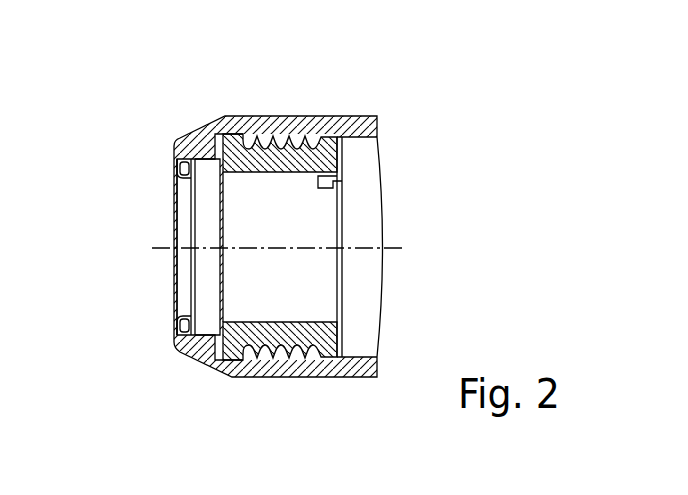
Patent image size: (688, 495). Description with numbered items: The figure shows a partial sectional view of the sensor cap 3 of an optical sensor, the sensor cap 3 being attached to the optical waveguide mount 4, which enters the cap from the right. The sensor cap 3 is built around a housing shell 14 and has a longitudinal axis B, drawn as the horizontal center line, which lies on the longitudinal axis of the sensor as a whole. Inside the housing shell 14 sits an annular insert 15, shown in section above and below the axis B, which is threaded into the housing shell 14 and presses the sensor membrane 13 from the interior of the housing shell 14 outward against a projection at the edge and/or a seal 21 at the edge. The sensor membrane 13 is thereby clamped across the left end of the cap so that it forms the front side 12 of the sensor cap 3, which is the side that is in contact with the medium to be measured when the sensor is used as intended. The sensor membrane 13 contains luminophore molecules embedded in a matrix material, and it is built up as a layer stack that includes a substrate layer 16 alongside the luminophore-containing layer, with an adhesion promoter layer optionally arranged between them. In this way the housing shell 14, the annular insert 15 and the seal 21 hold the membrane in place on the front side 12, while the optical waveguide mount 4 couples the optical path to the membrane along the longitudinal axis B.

The sensor cap 3 is at (340, 88).
The optical waveguide mount 4 is at (358, 223).
The front side 12 is at (176, 213).
The sensor membrane 13 is at (183, 279).
The housing shell 14 is at (325, 360).
The annular insert 15 is at (270, 340).
The substrate layer 16 is at (201, 325).
The seal 21 is at (193, 314).
The longitudinal axis B is at (266, 250).